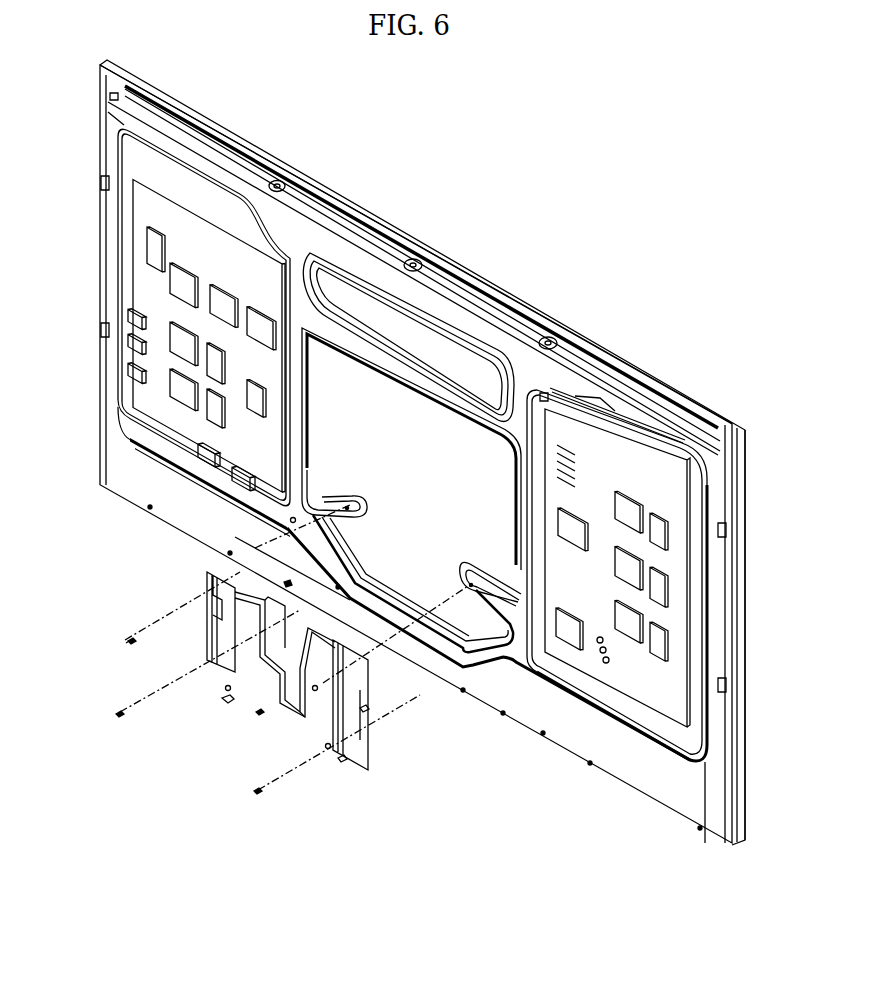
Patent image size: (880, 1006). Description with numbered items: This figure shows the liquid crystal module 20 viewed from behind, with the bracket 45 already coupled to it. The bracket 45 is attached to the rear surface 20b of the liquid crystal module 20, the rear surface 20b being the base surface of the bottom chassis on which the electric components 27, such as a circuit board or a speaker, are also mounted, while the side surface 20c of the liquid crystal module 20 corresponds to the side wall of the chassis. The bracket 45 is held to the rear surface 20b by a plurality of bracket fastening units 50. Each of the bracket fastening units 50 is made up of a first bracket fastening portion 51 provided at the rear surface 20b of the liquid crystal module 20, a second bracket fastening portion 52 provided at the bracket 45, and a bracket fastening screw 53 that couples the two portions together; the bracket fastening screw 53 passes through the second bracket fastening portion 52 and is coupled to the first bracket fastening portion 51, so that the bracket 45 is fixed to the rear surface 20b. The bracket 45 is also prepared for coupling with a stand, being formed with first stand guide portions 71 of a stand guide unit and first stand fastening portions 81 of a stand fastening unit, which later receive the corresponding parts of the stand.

The liquid crystal module 20 is at (486, 273).
The rear surface 20b is at (366, 302).
The side surface 20c is at (452, 262).
The electric components 27 is at (150, 292).
The bracket 45 is at (273, 716).
The bracket fastening units 50 is at (112, 637).
The first bracket fastening portion 51 is at (347, 508).
The second bracket fastening portion 52 is at (220, 586).
The bracket fastening screw 53 is at (130, 636).
The first stand guide portions 71 is at (225, 700).
The first stand fastening portions 81 is at (228, 690).